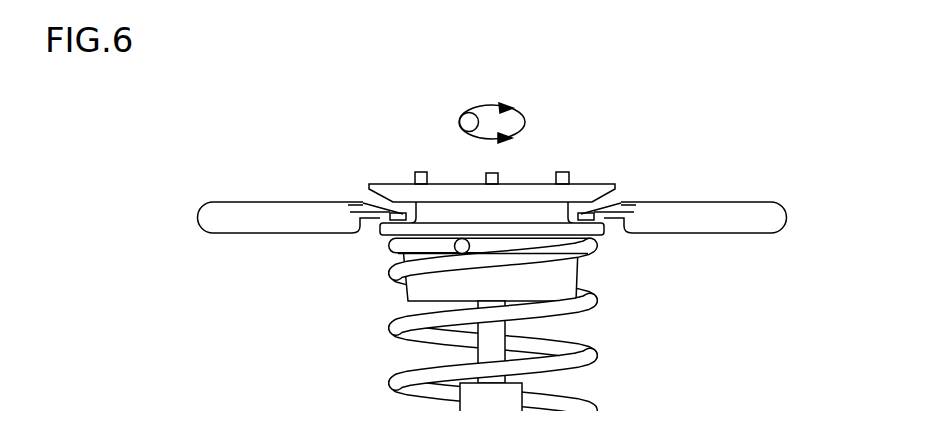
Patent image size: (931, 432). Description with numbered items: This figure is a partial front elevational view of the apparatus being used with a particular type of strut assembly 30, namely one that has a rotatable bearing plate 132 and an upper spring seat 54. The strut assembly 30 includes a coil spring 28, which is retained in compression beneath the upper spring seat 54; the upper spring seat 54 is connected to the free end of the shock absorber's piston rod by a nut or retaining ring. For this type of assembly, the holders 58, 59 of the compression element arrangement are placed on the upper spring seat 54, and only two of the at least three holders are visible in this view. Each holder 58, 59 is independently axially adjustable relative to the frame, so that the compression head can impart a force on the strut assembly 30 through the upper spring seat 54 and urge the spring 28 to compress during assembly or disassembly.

The coil spring 28 is at (599, 359).
The upper spring seat 54 is at (600, 234).
The holder 58 is at (295, 202).
The holder 59 is at (697, 202).
The rotatable bearing plate 132 is at (593, 199).
The strut assembly 30 is at (751, 183).